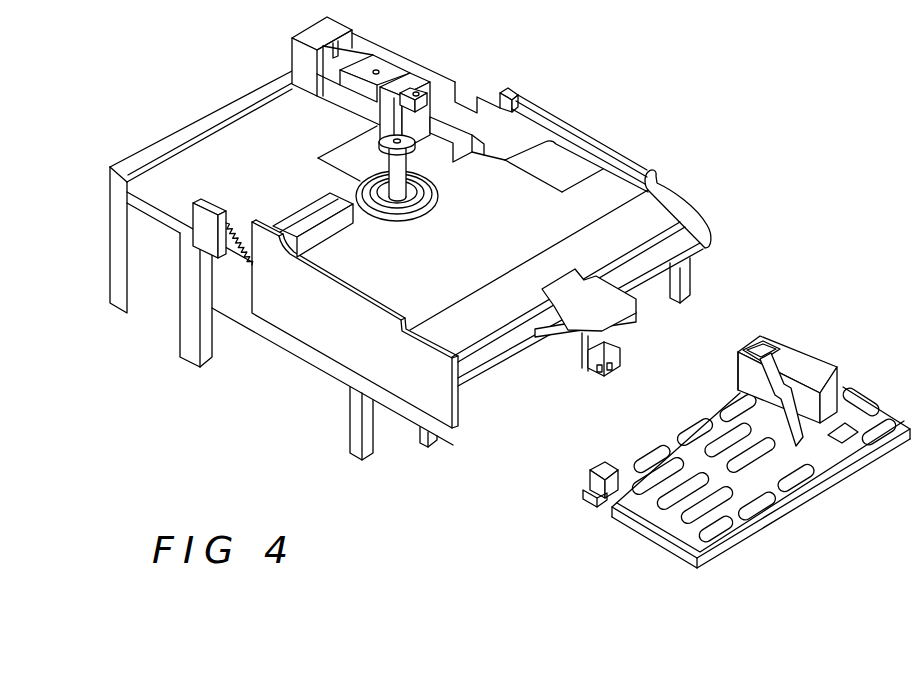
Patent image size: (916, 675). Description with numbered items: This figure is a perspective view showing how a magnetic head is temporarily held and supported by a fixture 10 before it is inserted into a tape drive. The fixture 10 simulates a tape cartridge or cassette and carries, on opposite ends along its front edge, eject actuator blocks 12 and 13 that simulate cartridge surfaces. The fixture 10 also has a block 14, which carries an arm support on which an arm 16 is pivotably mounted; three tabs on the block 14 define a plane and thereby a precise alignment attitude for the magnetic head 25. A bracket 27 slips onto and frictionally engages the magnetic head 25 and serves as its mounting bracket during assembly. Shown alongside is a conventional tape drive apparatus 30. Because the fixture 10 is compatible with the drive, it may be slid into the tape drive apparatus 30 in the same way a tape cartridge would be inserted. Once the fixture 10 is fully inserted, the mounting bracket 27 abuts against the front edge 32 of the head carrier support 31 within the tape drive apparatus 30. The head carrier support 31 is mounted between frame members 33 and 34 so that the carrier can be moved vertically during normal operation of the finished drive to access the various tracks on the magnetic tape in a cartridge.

The fixture 10 is at (729, 444).
The eject actuator block 12 is at (786, 383).
The eject actuator block 13 is at (601, 466).
The block 14 is at (824, 387).
The arm 16 is at (792, 440).
The magnetic head 25 is at (750, 345).
The bracket 27 is at (738, 375).
The tape drive apparatus 30 is at (410, 232).
The head carrier support 31 is at (393, 58).
The front edge 32 is at (423, 113).
The frame member 33 is at (417, 73).
The frame member 34 is at (313, 30).